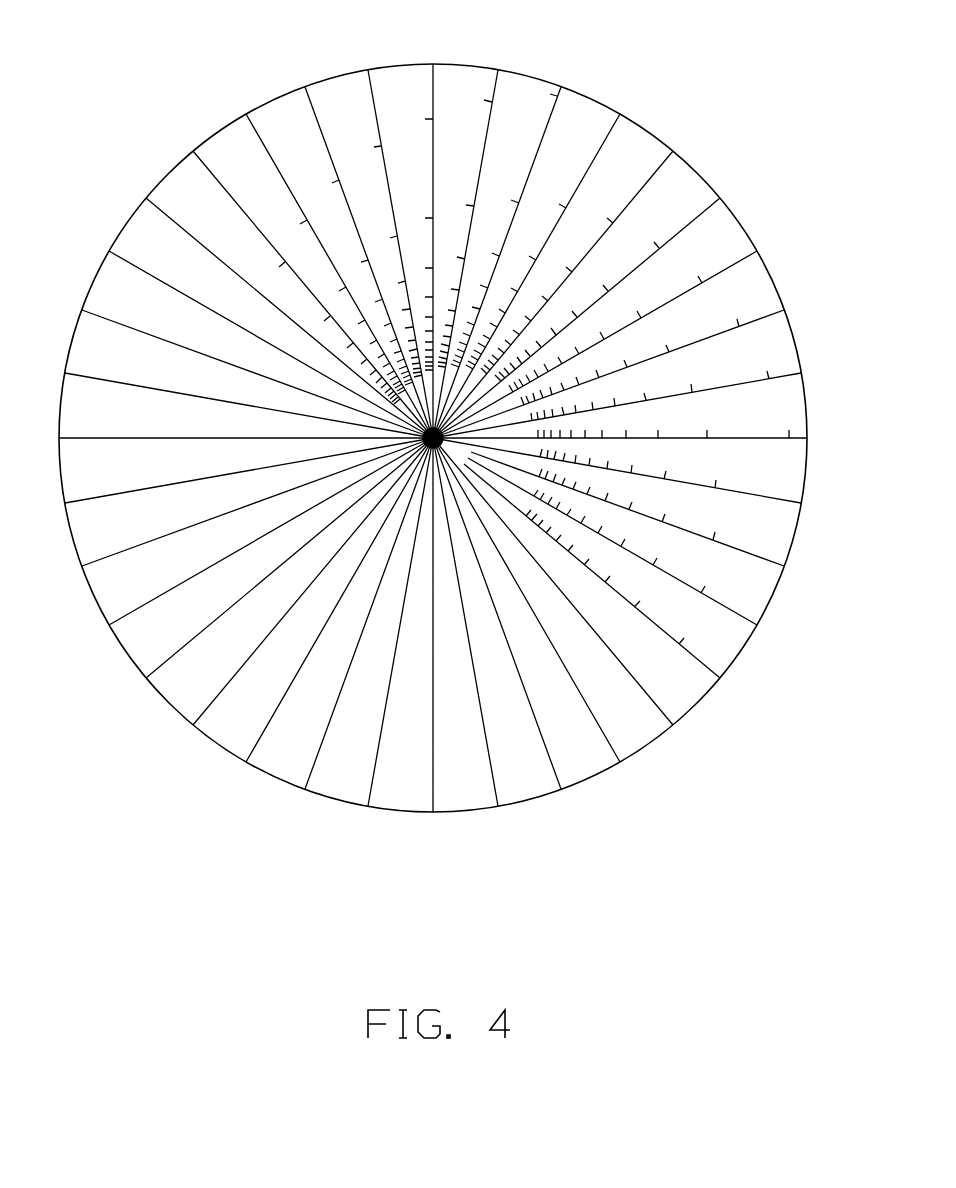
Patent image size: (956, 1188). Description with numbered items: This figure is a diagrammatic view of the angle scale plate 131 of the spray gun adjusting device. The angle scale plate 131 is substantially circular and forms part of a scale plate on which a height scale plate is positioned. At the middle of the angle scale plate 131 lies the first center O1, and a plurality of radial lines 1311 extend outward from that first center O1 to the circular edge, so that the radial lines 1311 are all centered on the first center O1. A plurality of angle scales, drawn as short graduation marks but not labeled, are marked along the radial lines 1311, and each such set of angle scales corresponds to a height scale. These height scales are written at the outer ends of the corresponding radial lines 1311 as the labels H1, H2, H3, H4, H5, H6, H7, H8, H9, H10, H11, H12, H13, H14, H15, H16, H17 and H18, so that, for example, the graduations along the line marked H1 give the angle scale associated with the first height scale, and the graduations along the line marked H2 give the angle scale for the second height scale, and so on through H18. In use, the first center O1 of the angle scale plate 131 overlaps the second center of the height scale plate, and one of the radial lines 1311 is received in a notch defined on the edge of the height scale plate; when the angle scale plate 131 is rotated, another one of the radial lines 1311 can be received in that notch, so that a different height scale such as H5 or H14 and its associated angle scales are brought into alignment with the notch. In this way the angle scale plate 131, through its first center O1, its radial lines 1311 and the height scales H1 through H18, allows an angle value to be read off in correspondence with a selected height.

The angle scale plate 131 is at (433, 412).
The radial lines 1311 is at (541, 147).
The first center O1 is at (446, 449).
The height scale H1 is at (313, 293).
The height scale H2 is at (339, 274).
The height scale H3 is at (369, 262).
The height scale H4 is at (400, 254).
The height scale H5 is at (450, 251).
The height scale H6 is at (481, 254).
The height scale H7 is at (543, 228).
The height scale H8 is at (539, 276).
The height scale H9 is at (562, 294).
The height scale H10 is at (585, 318).
The height scale H11 is at (602, 344).
The height scale H12 is at (613, 374).
The height scale H13 is at (618, 405).
The height scale H14 is at (620, 451).
The height scale H15 is at (617, 483).
The height scale H16 is at (627, 520).
The height scale H17 is at (612, 550).
The height scale H18 is at (592, 579).